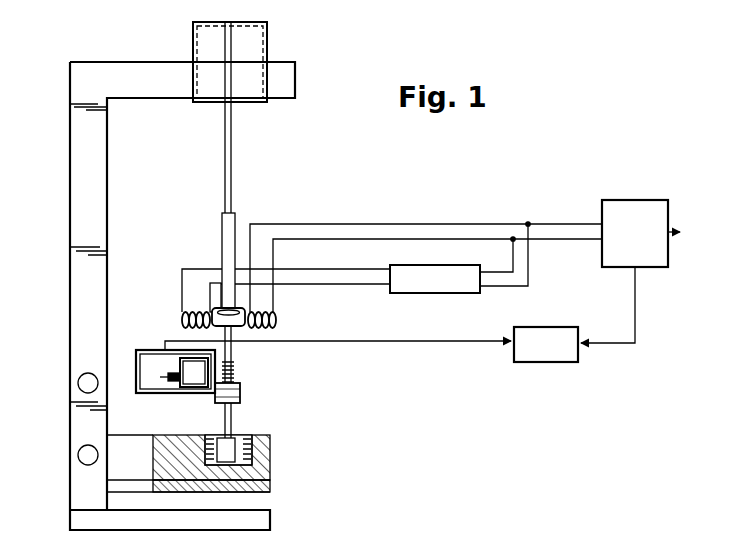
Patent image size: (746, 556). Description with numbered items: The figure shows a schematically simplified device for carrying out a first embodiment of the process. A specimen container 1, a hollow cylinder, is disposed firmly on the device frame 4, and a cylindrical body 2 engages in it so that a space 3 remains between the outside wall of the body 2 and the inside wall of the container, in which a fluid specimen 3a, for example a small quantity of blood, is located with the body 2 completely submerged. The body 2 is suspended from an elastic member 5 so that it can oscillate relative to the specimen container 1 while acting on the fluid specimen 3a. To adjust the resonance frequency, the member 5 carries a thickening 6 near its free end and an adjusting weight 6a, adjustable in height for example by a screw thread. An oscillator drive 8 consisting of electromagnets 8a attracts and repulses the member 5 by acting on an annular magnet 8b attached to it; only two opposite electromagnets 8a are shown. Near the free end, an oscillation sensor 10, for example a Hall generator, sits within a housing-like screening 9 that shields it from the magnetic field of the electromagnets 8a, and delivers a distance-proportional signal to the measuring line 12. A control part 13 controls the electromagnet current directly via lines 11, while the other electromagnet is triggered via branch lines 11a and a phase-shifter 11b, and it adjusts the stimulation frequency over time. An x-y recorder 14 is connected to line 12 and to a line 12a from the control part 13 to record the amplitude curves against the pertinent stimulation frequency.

The specimen container 1 is at (270, 487).
The cylindrical body 2 is at (238, 440).
The space 3 is at (270, 457).
The fluid specimen 3a is at (215, 437).
The device frame 4 is at (78, 289).
The elastic member 5 is at (226, 165).
The thickening 6 is at (232, 230).
The adjusting weight 6a is at (241, 392).
The oscillator drive 8 is at (240, 288).
The electromagnets 8a is at (190, 314).
The annular magnet 8b is at (216, 300).
The housing-like screening 9 is at (150, 348).
The oscillation sensor 10 is at (180, 382).
The lines 11 is at (423, 237).
The branch lines 11a is at (340, 270).
The phase-shifter 11b is at (450, 286).
The measuring line 12 is at (385, 342).
The line 12a is at (636, 316).
The control part 13 is at (636, 212).
The x-y recorder 14 is at (555, 362).